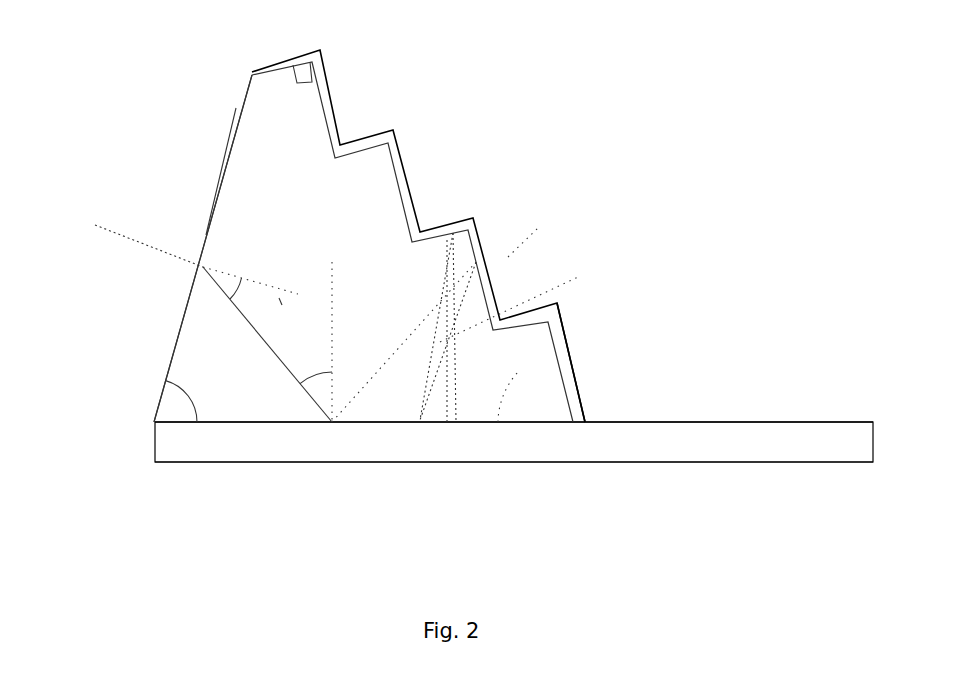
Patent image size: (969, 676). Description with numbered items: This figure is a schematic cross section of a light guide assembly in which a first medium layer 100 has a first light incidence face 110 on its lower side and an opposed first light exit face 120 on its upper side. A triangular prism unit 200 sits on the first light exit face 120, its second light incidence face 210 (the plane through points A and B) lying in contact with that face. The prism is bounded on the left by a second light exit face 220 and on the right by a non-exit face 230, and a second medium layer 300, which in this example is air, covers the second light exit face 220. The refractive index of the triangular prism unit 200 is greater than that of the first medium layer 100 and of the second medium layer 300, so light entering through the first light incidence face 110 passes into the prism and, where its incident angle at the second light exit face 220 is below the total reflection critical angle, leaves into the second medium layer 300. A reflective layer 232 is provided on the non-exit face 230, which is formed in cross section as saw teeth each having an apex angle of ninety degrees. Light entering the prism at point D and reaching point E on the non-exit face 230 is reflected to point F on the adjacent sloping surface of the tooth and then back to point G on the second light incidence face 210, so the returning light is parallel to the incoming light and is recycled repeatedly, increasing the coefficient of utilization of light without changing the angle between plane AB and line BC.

The first medium layer 100 is at (712, 443).
The first light incidence face 110 is at (508, 460).
The first light exit face 120 is at (733, 418).
The triangular prism unit 200 is at (378, 198).
The second light incidence face 210 is at (292, 422).
The second light exit face 220 is at (180, 332).
The non-exit face 230 is at (558, 372).
The reflective layer 232 is at (325, 127).
The second medium layer 300 is at (105, 122).